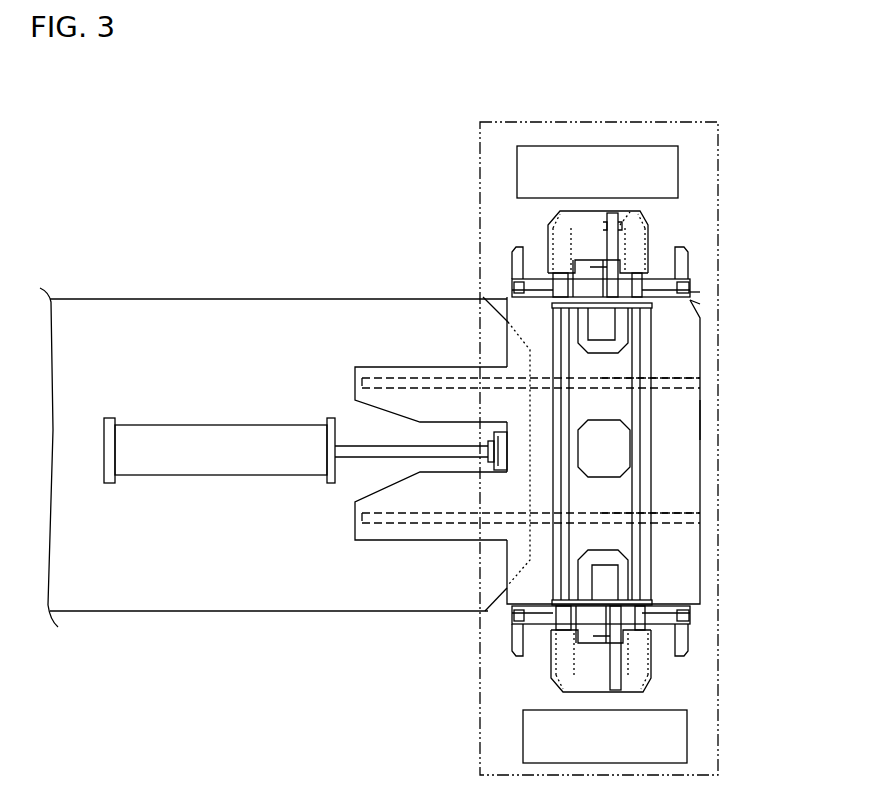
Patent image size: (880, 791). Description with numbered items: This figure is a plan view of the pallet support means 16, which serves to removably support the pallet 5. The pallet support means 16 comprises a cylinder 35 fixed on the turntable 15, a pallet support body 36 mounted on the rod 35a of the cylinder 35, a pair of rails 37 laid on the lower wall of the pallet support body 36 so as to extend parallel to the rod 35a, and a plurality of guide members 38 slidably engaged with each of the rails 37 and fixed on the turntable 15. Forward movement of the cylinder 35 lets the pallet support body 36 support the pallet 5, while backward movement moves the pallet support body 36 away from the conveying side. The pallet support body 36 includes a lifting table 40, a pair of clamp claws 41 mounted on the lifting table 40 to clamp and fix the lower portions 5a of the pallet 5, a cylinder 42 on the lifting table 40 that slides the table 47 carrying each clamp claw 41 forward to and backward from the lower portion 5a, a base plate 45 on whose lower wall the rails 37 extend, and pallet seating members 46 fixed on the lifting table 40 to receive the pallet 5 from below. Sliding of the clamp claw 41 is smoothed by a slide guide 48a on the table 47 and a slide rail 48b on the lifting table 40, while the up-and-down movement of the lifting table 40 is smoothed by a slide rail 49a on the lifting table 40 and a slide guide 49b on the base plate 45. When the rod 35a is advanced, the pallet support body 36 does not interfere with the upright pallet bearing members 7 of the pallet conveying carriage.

The pallet 5 is at (718, 172).
The lower portion of the pallet 5a is at (692, 203).
The pallet bearing member 7 is at (622, 146).
The turntable 15 is at (325, 299).
The pallet support means 16 is at (760, 258).
The cylinder 35 is at (226, 425).
The rod 35a is at (356, 445).
The pallet support body 36 is at (703, 468).
The rail 37 is at (692, 376).
The guide member 38 is at (381, 377).
The lifting table 40 is at (638, 492).
The clamp claw 41 is at (621, 222).
The cylinder 42 is at (620, 338).
The base plate 45 is at (702, 420).
The pallet seating member 46 is at (512, 250).
The table 47 is at (552, 226).
The slide guide 48a is at (648, 243).
The slide rail 48b is at (692, 303).
The slide rail 49a is at (692, 285).
The slide guide 49b is at (690, 292).